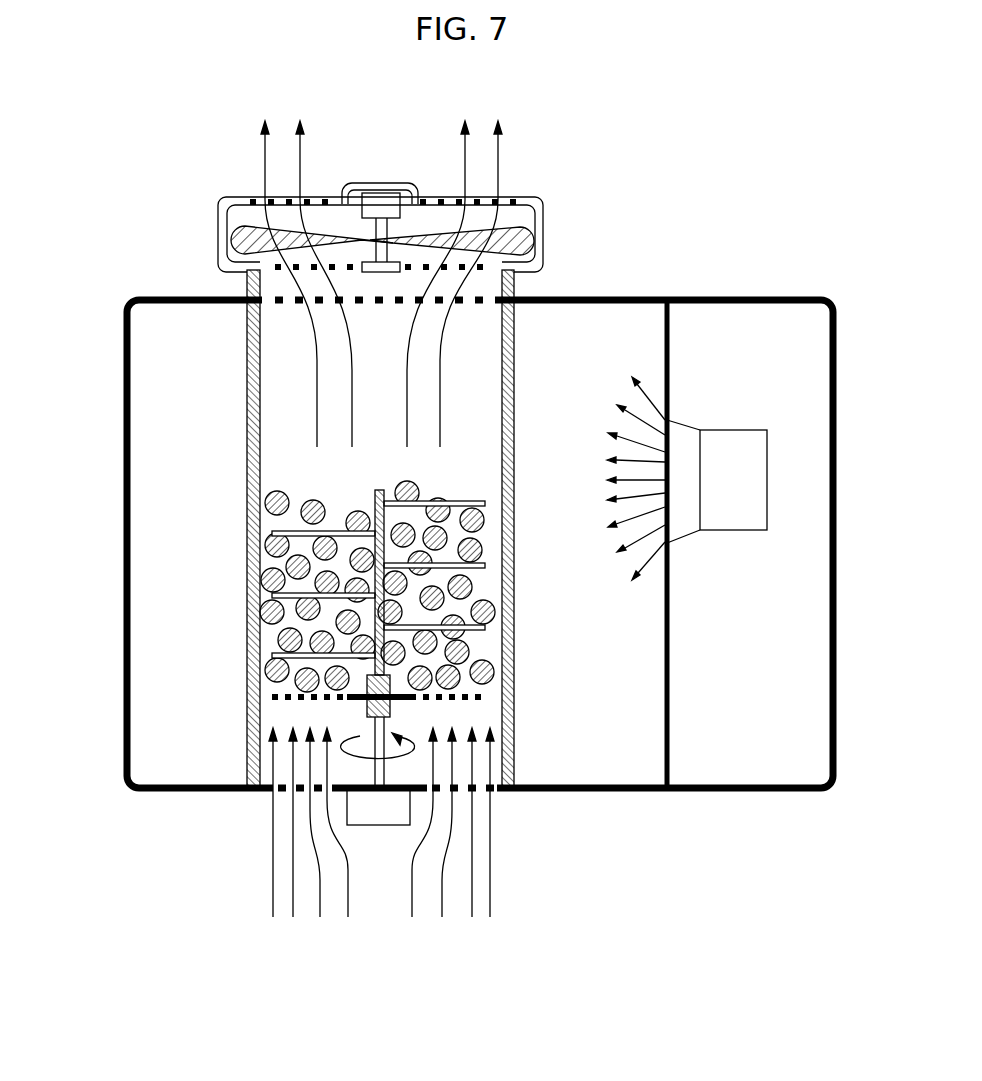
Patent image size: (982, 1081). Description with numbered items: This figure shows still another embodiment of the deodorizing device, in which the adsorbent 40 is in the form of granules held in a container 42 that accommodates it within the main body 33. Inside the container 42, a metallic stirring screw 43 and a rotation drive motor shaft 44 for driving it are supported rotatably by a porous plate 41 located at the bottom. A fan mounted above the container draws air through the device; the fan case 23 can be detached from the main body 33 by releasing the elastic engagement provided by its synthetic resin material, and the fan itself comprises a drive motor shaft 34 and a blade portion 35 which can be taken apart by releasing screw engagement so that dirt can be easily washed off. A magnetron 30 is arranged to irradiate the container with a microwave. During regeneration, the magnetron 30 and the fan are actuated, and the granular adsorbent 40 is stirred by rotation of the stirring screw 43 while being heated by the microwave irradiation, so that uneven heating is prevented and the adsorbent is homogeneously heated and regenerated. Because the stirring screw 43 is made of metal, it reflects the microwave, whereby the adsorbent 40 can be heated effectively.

The fan case 23 is at (545, 232).
The magnetron 30 is at (740, 480).
The main body 33 is at (783, 300).
The drive motor shaft 34 is at (378, 205).
The blade portion 35 is at (513, 213).
The adsorbent 40 is at (268, 582).
The porous plate 41 is at (455, 700).
The container 42 is at (248, 403).
The stirring screw 43 is at (372, 618).
The rotation drive motor shaft 44 is at (377, 748).